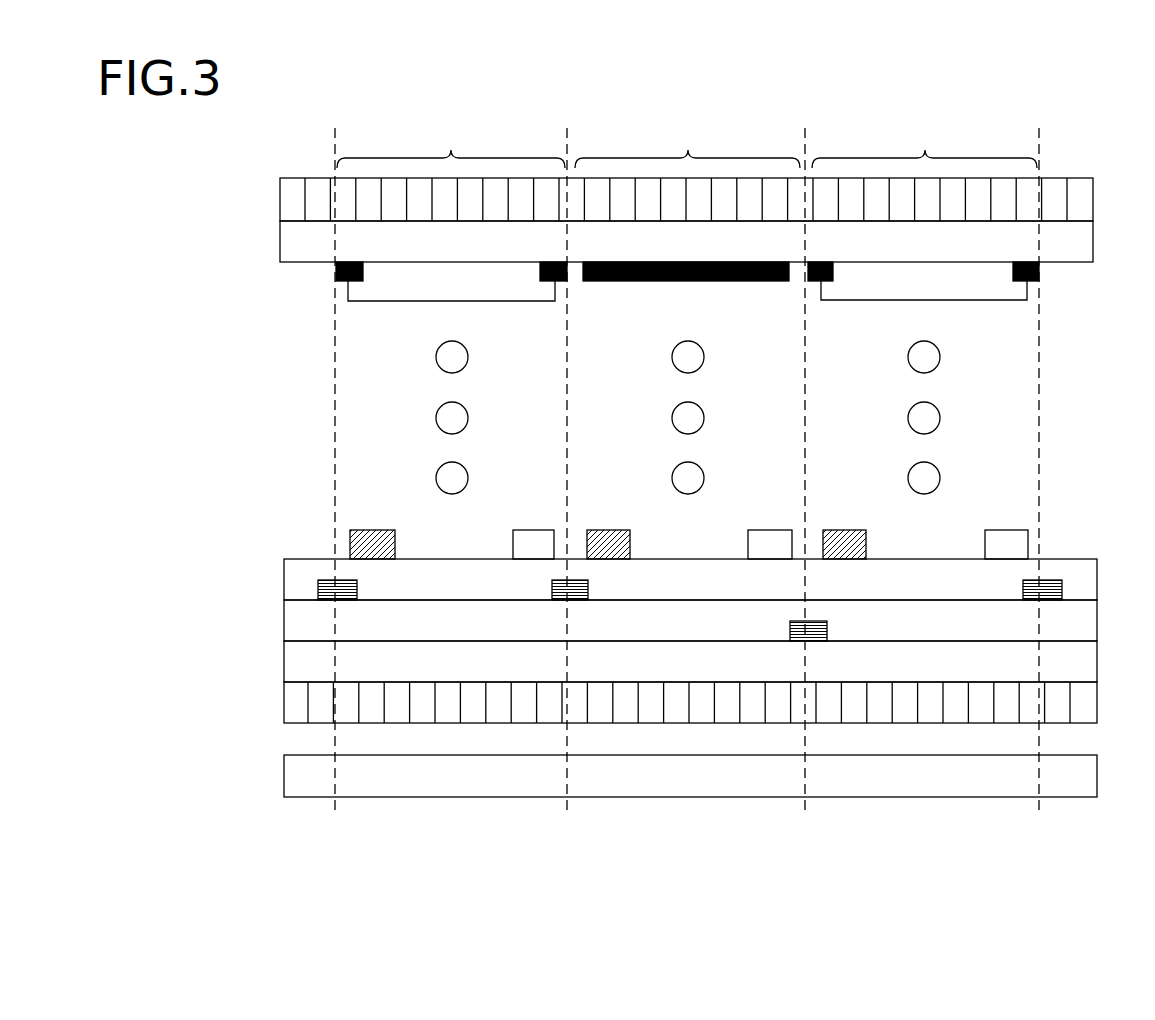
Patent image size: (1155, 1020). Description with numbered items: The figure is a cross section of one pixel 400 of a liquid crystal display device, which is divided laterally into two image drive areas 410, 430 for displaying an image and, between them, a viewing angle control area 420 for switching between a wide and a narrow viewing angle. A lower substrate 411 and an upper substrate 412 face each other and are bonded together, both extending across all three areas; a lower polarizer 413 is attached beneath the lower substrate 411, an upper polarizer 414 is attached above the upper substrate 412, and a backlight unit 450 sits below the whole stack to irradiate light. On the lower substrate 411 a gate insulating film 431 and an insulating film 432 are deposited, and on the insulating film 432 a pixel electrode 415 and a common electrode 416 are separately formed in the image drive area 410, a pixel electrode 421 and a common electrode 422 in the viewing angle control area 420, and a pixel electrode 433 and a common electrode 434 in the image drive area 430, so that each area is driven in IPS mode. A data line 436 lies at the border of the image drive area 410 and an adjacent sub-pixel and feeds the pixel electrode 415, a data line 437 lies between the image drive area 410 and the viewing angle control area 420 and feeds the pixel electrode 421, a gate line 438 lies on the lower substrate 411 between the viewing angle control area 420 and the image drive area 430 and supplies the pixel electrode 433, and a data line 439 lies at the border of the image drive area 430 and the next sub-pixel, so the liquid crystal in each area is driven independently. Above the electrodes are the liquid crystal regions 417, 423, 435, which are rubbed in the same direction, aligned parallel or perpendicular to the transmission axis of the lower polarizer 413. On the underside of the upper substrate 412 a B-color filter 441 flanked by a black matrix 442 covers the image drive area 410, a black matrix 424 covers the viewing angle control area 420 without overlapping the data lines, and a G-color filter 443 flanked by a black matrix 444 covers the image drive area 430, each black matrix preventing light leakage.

The pixel 400 is at (176, 151).
The image drive area 410 is at (342, 163).
The viewing angle control area 420 is at (576, 163).
The image drive area 430 is at (814, 163).
The lower substrate 411 is at (282, 658).
The upper substrate 412 is at (282, 241).
The lower polarizer 413 is at (282, 698).
The upper polarizer 414 is at (282, 199).
The pixel electrode 415 is at (350, 530).
The common electrode 416 is at (530, 538).
The first liquid crystal region 417 is at (418, 342).
The pixel electrode 421 is at (607, 538).
The common electrode 422 is at (768, 538).
The liquid crystal region 423 is at (665, 342).
The black matrix 424 is at (758, 283).
The gate insulating film 431 is at (282, 617).
The insulating film 432 is at (282, 578).
The pixel electrode 433 is at (838, 538).
The common electrode 434 is at (1007, 538).
The liquid crystal region 435 is at (901, 342).
The data line 436 is at (318, 583).
The data line 437 is at (588, 588).
The gate line 438 is at (827, 630).
The data line 439 is at (1062, 587).
The B-color filter 441 is at (383, 296).
The black matrix 442 is at (336, 275).
The G-color filter 443 is at (1027, 298).
The black matrix 444 is at (1040, 273).
The backlight unit 450 is at (282, 773).